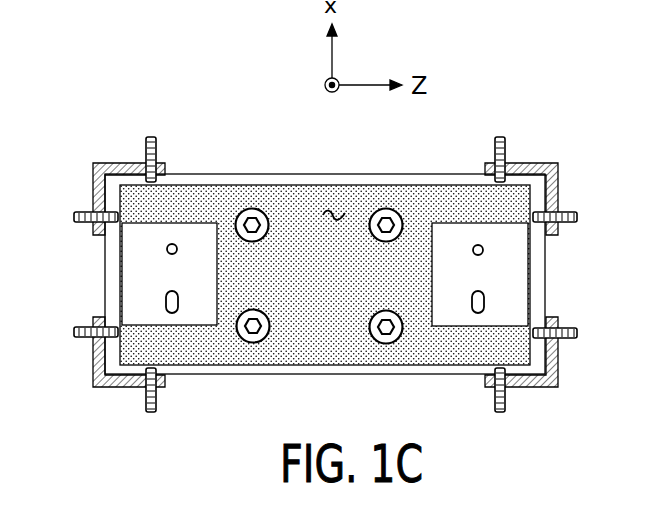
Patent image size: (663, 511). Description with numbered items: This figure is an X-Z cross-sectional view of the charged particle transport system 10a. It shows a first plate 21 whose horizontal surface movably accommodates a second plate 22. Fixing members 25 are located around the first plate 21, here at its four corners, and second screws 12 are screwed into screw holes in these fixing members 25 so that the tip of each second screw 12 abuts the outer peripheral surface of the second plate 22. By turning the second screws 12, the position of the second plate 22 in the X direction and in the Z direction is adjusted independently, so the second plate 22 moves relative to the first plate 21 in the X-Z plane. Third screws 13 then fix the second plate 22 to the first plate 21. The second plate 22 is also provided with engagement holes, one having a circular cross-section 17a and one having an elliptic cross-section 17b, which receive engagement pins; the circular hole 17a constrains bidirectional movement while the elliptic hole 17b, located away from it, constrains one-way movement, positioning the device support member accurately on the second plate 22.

The charged particle transport system 10a is at (200, 90).
The second screw 12 is at (158, 150).
The third screw 13 is at (252, 208).
The engagement hole having a circular cross-section 17a is at (167, 249).
The engagement hole having an elliptic cross-section 17b is at (166, 302).
The first plate 21 is at (300, 174).
The second plate 22 is at (333, 212).
The fixing member 25 is at (108, 163).